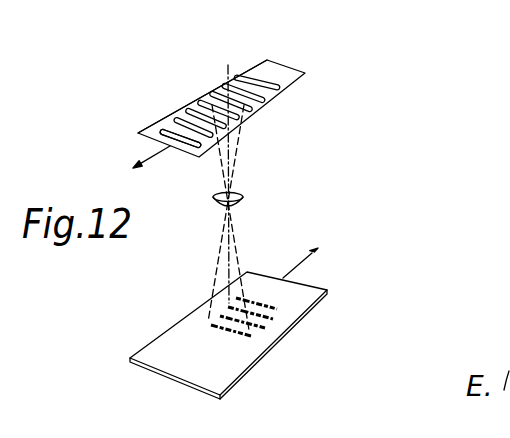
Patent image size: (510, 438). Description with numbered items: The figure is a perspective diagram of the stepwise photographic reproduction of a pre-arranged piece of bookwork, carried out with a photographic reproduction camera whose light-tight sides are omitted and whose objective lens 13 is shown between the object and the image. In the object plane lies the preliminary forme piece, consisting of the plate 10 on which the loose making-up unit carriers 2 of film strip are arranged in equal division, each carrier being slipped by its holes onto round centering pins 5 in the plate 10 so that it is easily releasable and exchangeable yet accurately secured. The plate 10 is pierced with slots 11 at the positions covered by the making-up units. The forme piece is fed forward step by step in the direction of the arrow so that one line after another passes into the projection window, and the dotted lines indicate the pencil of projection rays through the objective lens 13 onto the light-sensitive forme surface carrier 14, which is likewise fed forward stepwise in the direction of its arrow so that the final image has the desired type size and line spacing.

The making-up unit carrier 2 is at (285, 73).
The plate 10 is at (151, 126).
The centering pin 5 is at (199, 113).
The slot 11 is at (174, 138).
The objective lens 13 is at (243, 197).
The light-sensitive forme surface carrier 14 is at (167, 352).